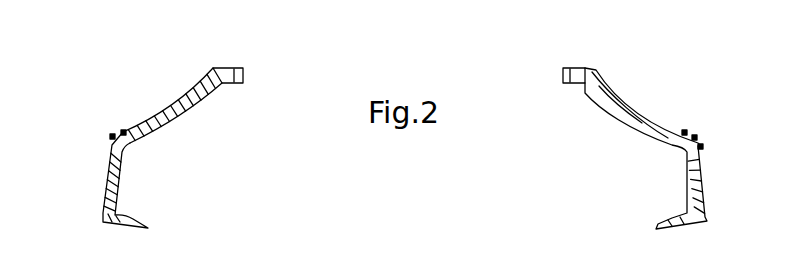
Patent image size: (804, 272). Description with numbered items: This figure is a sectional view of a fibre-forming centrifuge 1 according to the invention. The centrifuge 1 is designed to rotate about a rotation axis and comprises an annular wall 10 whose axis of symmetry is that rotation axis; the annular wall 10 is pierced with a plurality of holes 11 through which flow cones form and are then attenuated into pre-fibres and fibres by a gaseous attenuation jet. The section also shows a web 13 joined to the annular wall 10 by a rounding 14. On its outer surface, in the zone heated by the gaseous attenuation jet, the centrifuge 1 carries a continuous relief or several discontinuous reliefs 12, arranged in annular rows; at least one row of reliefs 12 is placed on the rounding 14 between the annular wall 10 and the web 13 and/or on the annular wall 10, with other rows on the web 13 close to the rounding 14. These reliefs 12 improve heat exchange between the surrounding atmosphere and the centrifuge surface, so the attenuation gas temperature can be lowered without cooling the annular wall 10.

The centrifuge 1 is at (148, 120).
The annular wall 10 is at (114, 180).
The holes 11 is at (119, 178).
The reliefs 12 is at (123, 131).
The web 13 is at (185, 99).
The rounding 14 is at (684, 146).